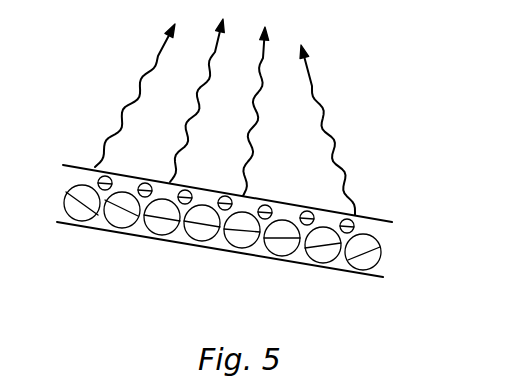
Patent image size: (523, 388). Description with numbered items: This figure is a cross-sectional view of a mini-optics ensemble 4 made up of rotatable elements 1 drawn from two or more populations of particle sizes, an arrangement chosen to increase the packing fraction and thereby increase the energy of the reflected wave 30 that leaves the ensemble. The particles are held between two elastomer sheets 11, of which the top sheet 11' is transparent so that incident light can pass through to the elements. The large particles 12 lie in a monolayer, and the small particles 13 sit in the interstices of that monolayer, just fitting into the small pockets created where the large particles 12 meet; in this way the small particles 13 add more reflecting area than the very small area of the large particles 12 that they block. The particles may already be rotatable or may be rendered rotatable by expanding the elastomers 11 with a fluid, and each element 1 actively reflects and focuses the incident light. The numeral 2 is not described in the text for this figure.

The rotatable element 1 is at (435, 313).
The particles (large spheres) 2 is at (65, 212).
The mini-optics ensemble 4 is at (125, 272).
The elastomer sheet 11 is at (223, 267).
The top sheet 11' is at (243, 192).
The large particle 12 is at (382, 256).
The small particle 13 is at (217, 193).
The reflected wave 30 is at (147, 83).